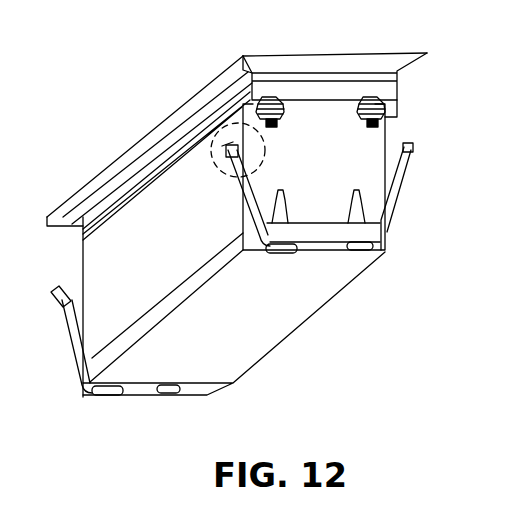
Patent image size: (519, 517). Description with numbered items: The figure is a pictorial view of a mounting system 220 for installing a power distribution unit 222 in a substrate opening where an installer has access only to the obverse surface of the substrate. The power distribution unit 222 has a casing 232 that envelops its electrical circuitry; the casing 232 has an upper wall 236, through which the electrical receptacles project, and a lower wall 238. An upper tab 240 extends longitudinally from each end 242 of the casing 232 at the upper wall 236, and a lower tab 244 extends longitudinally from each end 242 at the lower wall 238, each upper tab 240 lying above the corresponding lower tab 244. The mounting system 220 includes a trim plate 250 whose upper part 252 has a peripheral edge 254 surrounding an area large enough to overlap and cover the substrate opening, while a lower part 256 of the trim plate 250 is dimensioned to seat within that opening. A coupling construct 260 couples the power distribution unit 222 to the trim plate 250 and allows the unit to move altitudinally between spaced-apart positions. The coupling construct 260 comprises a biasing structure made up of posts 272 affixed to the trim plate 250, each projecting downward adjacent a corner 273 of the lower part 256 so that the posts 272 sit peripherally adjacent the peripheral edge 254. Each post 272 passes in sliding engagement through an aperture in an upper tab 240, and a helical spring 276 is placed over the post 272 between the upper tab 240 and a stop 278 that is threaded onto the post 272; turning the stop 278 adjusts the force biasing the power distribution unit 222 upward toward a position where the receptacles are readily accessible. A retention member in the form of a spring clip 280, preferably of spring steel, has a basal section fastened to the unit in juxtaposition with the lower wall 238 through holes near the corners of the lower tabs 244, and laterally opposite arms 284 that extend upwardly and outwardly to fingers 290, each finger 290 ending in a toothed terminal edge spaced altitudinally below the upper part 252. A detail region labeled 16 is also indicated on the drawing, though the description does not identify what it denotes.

The connector 16 is at (219, 198).
The mounting system 220 is at (186, 100).
The power distribution unit 222 is at (390, 138).
The casing 232 is at (92, 249).
The upper wall 236 is at (124, 204).
The lower wall 238 is at (283, 318).
The upper tab 240 is at (302, 90).
The end 242 is at (392, 174).
The lower tab 244 is at (315, 236).
The trim plate 250 is at (366, 50).
The upper part 252 is at (153, 133).
The peripheral edge 254 is at (83, 188).
The lower part 256 is at (163, 153).
The coupling construct 260 is at (392, 116).
The post 272 is at (270, 97).
The corner 273 is at (250, 81).
The helical spring 276 is at (358, 105).
The stop 278 is at (360, 132).
The spring clip 280 is at (336, 255).
The arm 284 is at (221, 239).
The finger 290 is at (212, 163).